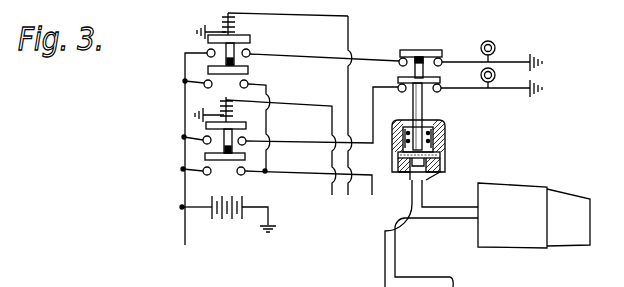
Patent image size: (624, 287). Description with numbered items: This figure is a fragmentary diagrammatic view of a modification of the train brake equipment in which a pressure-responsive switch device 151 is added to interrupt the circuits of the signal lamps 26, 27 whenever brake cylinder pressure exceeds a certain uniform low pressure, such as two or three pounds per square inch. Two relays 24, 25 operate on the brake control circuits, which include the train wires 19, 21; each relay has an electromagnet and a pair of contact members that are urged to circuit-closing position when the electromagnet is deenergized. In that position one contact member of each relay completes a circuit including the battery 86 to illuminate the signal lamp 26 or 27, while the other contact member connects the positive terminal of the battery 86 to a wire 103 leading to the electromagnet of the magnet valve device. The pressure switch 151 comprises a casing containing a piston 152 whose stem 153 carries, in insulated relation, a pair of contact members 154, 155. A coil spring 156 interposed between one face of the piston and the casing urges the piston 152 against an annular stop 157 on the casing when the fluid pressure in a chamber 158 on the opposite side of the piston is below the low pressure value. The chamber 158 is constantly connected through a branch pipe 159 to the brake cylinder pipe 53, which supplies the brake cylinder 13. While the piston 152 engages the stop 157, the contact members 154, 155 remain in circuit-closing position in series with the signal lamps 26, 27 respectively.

The relay 24 is at (226, 13).
The relay 25 is at (223, 98).
The battery 86 is at (223, 221).
The wire 103 is at (307, 175).
The train wire 21 is at (332, 191).
The train wire 19 is at (348, 191).
The annular stop 157 is at (397, 175).
The branch pipe 159 is at (418, 192).
The pipe 53 is at (392, 250).
The brake cylinder 13 is at (517, 185).
The pressure-responsive switch device 151 is at (449, 134).
The piston 152 is at (400, 153).
The stem 153 is at (424, 97).
The contact member 154 is at (418, 50).
The contact member 155 is at (432, 78).
The coil spring 156 is at (440, 128).
The chamber 158 is at (441, 158).
The signal lamp 26 is at (496, 44).
The signal lamp 27 is at (497, 75).